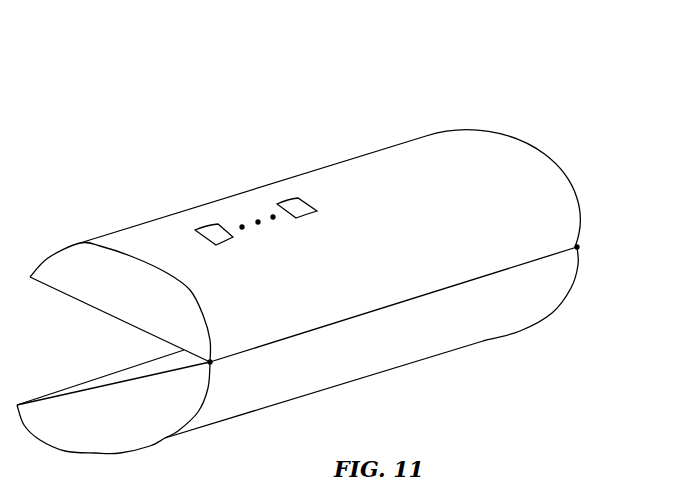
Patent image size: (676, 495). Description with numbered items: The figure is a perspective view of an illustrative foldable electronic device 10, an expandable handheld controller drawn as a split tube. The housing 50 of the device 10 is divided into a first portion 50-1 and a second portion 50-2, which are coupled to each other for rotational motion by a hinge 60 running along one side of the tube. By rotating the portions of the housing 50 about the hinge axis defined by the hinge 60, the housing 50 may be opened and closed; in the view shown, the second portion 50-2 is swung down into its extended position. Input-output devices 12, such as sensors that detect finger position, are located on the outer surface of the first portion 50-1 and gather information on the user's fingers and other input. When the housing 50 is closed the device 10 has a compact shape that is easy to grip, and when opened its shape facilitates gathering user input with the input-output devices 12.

The device 10 is at (528, 75).
The input-output devices 12 is at (205, 227).
The housing 50 is at (405, 142).
The first portion 50-1 is at (556, 163).
The second portion 50-2 is at (573, 283).
The hinge 60 is at (579, 247).